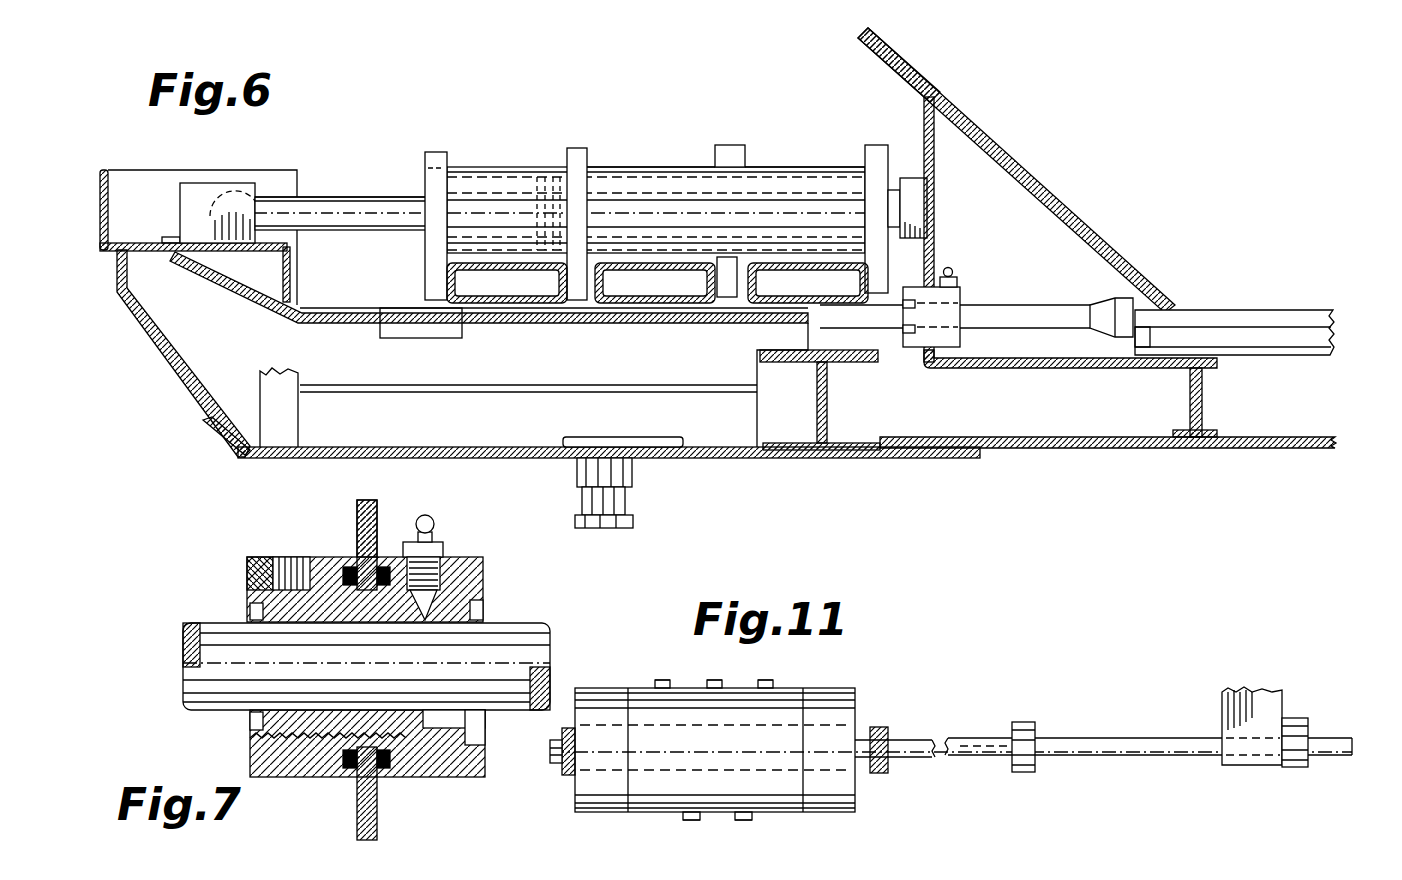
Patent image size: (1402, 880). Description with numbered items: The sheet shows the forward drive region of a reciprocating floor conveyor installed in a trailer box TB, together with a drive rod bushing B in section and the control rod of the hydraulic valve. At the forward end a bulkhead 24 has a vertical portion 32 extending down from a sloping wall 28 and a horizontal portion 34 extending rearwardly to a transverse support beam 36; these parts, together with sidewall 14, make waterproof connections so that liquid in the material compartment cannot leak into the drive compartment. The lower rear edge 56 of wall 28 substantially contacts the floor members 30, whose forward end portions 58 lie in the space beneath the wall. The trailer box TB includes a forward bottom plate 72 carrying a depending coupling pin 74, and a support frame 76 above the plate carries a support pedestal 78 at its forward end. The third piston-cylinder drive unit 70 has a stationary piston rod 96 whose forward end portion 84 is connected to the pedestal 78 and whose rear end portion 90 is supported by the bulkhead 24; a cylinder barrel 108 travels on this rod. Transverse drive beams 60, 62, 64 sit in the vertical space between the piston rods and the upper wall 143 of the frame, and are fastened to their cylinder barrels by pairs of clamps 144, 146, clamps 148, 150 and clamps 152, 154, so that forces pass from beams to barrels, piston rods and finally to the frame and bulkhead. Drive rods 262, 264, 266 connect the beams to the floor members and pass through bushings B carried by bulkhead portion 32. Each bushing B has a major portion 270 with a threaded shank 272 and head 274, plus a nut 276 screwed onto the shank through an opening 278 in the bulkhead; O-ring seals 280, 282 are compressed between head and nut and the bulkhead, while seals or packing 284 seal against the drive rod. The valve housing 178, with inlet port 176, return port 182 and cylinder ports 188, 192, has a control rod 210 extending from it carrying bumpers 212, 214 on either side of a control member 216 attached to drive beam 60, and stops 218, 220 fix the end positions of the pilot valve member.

In FIG. 6, the sidewall 14 is at (330, 285).
In FIG. 6, the bulkhead 24 is at (943, 120).
In FIG. 6, the sloping wall 28 is at (1030, 170).
In FIG. 6, the floor members 30 is at (1258, 307).
In FIG. 6, the vertical portion 32 is at (937, 256).
In FIG. 7, the vertical portion 32 is at (378, 812).
In FIG. 6, the horizontal portion 34 is at (980, 368).
In FIG. 6, the transverse support beam 36 is at (1205, 400).
In FIG. 6, the lower rear edge 56 is at (1170, 307).
In FIG. 6, the forward end portions 58 is at (1148, 337).
In FIG. 6, the transverse drive beam 60 is at (773, 283).
In FIG. 6, the second transverse drive beam 62 is at (633, 282).
In FIG. 6, the third transverse drive beam 64 is at (515, 287).
In FIG. 6, the third piston-cylinder drive unit 70 is at (333, 190).
In FIG. 6, the forward bottom plate 72 is at (700, 460).
In FIG. 6, the coupling pin 74 is at (632, 498).
In FIG. 6, the support frame 76 is at (335, 420).
In FIG. 6, the support pedestal 78 is at (147, 203).
In FIG. 6, the forward end portion 84 is at (228, 173).
In FIG. 6, the rear end portion 90 is at (928, 204).
In FIG. 6, the piston rod 96 is at (382, 210).
In FIG. 6, the cylinder barrel 108 is at (630, 170).
In FIG. 6, the upper wall 143 is at (415, 297).
In FIG. 6, the clamp 144 is at (745, 162).
In FIG. 6, the clamp 146 is at (875, 148).
In FIG. 6, the clamp 148 is at (593, 160).
In FIG. 6, the clamp 150 is at (725, 148).
In FIG. 6, the clamp 152 is at (441, 152).
In FIG. 6, the clamp 154 is at (575, 148).
In FIG. 11, the inlet port 176 is at (715, 680).
In FIG. 11, the valve housing 178 is at (768, 680).
In FIG. 11, the return port 182 is at (660, 680).
In FIG. 11, the cylinder port 188 is at (745, 818).
In FIG. 11, the second cylinder port 192 is at (685, 818).
In FIG. 11, the control rod 210 is at (967, 738).
In FIG. 11, the bumper 212 is at (1027, 722).
In FIG. 11, the bumper 214 is at (1298, 720).
In FIG. 11, the control member 216 is at (1230, 713).
In FIG. 11, the stop 218 is at (567, 777).
In FIG. 11, the stop 220 is at (882, 775).
In FIG. 7, the drive rods 262 is at (237, 653).
In FIG. 7, the drive rods 264 is at (326, 670).
In FIG. 6, the drive rods 266 is at (885, 320).
In FIG. 7, the drive rods 266 is at (326, 694).
In FIG. 7, the major portion 270 is at (487, 598).
In FIG. 7, the threaded shank 272 is at (320, 537).
In FIG. 7, the head 274 is at (463, 563).
In FIG. 7, the nut 276 is at (250, 570).
In FIG. 7, the opening 278 is at (380, 725).
In FIG. 7, the O-ring seal 280 is at (390, 557).
In FIG. 7, the O-ring seal 282 is at (345, 770).
In FIG. 7, the seals or packing 284 is at (247, 608).
In FIG. 6, the bushing B is at (960, 297).
In FIG. 7, the bushing B is at (488, 570).
In FIG. 6, the trailer box TB is at (1030, 456).